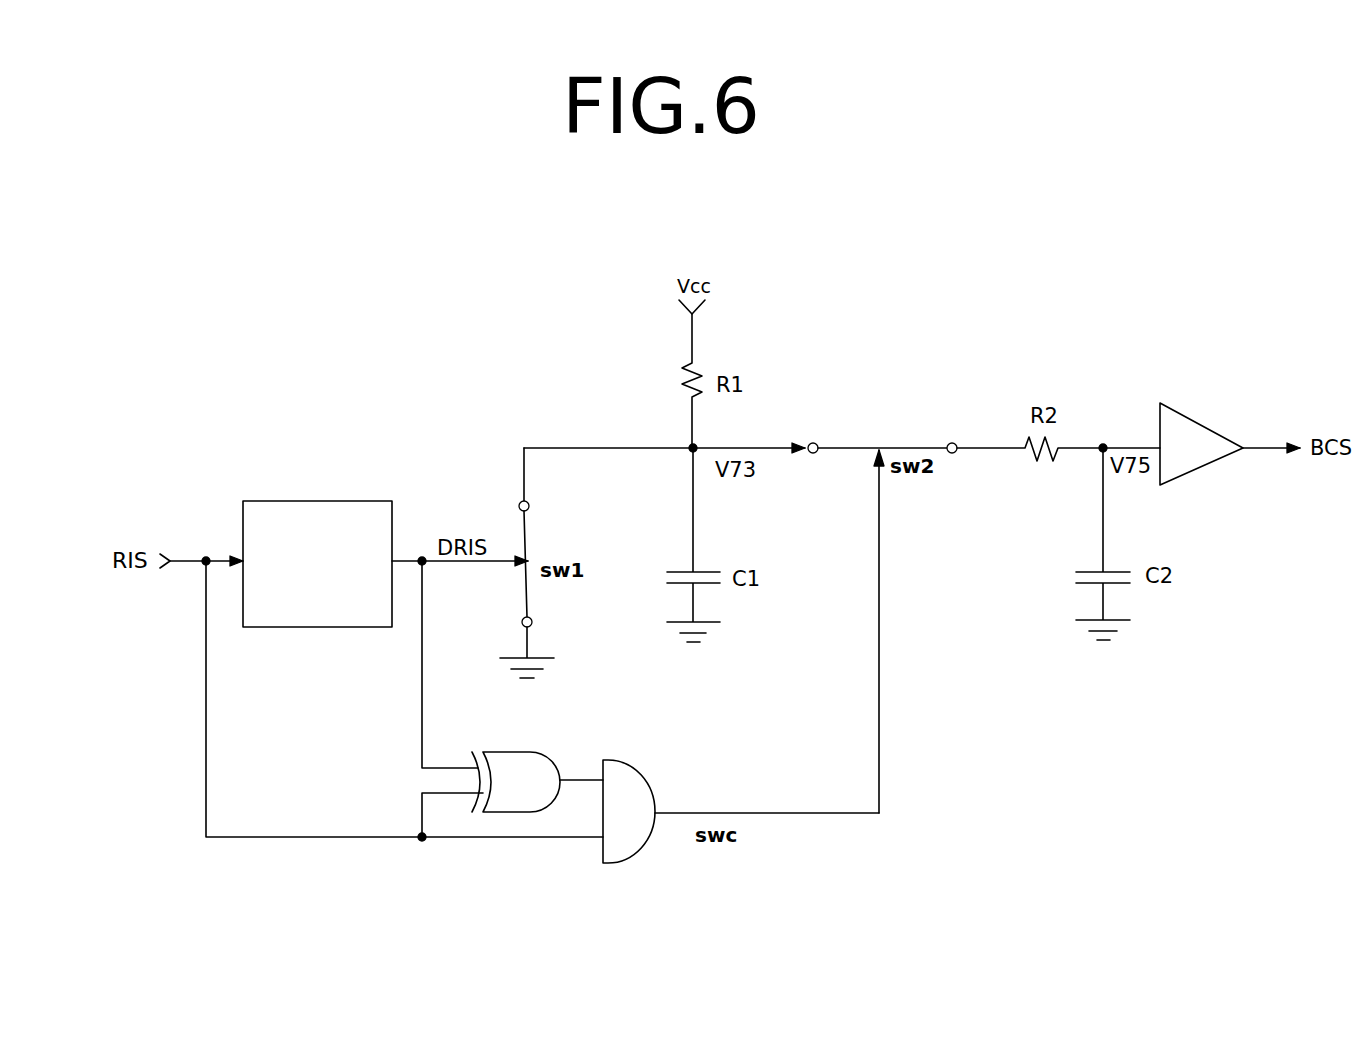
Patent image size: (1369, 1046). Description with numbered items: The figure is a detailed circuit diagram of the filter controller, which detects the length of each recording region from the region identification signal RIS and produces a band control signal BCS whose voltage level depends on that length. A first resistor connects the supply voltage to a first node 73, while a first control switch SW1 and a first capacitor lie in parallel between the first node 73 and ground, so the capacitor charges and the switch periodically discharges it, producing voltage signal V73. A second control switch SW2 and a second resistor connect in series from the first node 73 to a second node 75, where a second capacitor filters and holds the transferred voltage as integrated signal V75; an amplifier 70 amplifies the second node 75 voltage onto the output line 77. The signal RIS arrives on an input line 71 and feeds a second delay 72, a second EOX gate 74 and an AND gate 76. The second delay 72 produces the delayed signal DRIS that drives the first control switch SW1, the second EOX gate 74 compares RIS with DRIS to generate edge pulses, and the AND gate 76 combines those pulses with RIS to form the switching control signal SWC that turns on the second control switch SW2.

The amplifier 70 is at (1224, 411).
The input line 71 is at (221, 553).
The second delay 72 is at (380, 492).
The first node 73 is at (712, 436).
The second EOX gate 74 is at (554, 743).
The second node 75 is at (1122, 436).
The AND gate 76 is at (661, 773).
The output line 77 is at (1274, 432).